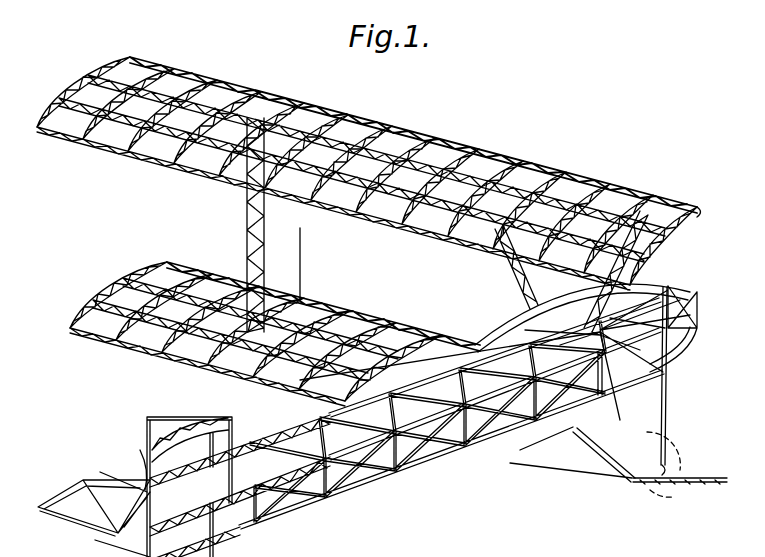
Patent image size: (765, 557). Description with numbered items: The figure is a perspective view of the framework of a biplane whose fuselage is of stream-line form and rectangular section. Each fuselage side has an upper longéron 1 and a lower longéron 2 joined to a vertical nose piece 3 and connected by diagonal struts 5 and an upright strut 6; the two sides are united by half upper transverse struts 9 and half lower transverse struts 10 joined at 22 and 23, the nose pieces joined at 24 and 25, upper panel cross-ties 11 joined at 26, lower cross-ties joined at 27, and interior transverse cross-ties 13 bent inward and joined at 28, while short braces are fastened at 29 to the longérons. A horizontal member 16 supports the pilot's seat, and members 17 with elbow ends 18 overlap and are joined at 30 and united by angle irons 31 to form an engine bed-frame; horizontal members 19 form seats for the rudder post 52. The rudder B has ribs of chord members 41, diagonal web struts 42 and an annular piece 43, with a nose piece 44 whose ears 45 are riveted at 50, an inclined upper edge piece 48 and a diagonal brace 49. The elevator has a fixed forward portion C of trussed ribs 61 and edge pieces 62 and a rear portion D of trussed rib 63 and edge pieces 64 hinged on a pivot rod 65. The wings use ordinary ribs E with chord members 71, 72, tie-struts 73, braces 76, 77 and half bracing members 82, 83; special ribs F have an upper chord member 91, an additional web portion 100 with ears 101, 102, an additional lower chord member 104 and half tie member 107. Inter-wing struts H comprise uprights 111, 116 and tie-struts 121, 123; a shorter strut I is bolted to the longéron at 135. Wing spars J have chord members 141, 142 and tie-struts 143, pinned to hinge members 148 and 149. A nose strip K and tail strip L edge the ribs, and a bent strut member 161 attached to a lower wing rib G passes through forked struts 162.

The upper longéron 1 is at (702, 308).
The lower longéron 2 is at (470, 500).
The vertical nose piece 3 is at (705, 296).
The diagonal struts 5 is at (580, 430).
The upright strut 6 is at (615, 410).
The half upper transverse struts 9 is at (295, 450).
The half lower transverse struts 10 is at (420, 500).
The half upper panel cross-ties 11 is at (310, 448).
The half interior transverse cross-ties 13 is at (340, 520).
The horizontal member 16 is at (600, 445).
The members integral with lower longéron 17 is at (675, 352).
The elbow ends 18 is at (685, 325).
The horizontal members 19 is at (208, 515).
The joint of upper struts 22 is at (575, 318).
The joint of lower struts 23 is at (535, 458).
The joint of upper vertical nose pieces 24 is at (690, 285).
The joint of lower vertical nose pieces 25 is at (700, 328).
The joint of upper panel cross-ties 26 is at (380, 430).
The joint of lower panel cross-ties 27 is at (440, 485).
The joint of interior transverse cross-ties 28 is at (392, 505).
The brace attachment points 29 is at (515, 498).
The joint of overlapping elbow ends 30 is at (660, 285).
The angle irons 31 is at (660, 268).
The chord members of rudder rib 41 is at (222, 425).
The diagonal web struts 42 is at (190, 425).
The annular piece 43 is at (240, 430).
The vertical nose piece of rudder 44 is at (238, 440).
The projecting ears 45 is at (240, 465).
The inclined upper edge piece 48 is at (212, 415).
The diagonal brace 49 is at (165, 425).
The rivets of nose piece ears 50 is at (236, 458).
The rudder post 52 is at (210, 455).
The trussed ribs of forward elevator portion 61 is at (120, 478).
The connecting edge pieces of forward elevator portion 62 is at (140, 455).
The trussed rib of rear elevator portion 63 is at (65, 488).
The connecting edge pieces of rear elevator portion 64 is at (110, 540).
The pivot rod 65 is at (138, 505).
The upper chord member of wing rib 71 is at (492, 148).
The lower chord member of wing rib 72 is at (465, 145).
The diagonal tie-struts of wing rib 73 is at (270, 250).
The braces of upper flange 76 is at (255, 80).
The braces of lower flange 77 is at (142, 62).
The half bracing member of upper flange 82 is at (160, 150).
The half bracing member of lower flange 83 is at (75, 333).
The upper chord member of special rib 91 is at (545, 160).
The additional web portion 100 is at (290, 95).
The ear of additional web portion 101 is at (268, 280).
The ear of additional web portion 102 is at (262, 362).
The additional lower chord member 104 is at (590, 178).
The half tie member 107 is at (295, 100).
The forward main upright of inter-wing strut 111 is at (265, 212).
The rear main upright of inter-wing strut 116 is at (246, 238).
The diagonal tie-struts of inter-wing strut 121 is at (247, 210).
The diagonal tie-struts connecting uprights 123 is at (265, 238).
The bolts of strut I 135 is at (670, 388).
The upper chord member of wing spar 141 is at (345, 105).
The lower chord member of wing spar 142 is at (135, 165).
The diagonal tie-struts of wing spar 143 is at (300, 170).
The hinge members for lower wing spars 148 is at (628, 452).
The hinge members for upper wing spars 149 is at (700, 210).
The bent strut member 161 is at (700, 478).
The forked struts 162 is at (664, 416).
The rudder B is at (147, 420).
The triangular forward portion of elevator plane C is at (140, 485).
The rear portion of elevator plane D is at (94, 511).
The ordinary wing ribs E is at (217, 78).
The special ribs F is at (276, 90).
The lower wing rib G is at (299, 285).
The inter-wing struts H is at (246, 222).
The shorter inter-wing strut I is at (505, 264).
The wing spars J is at (370, 115).
The nose strip K is at (320, 108).
The tail strip L is at (105, 145).